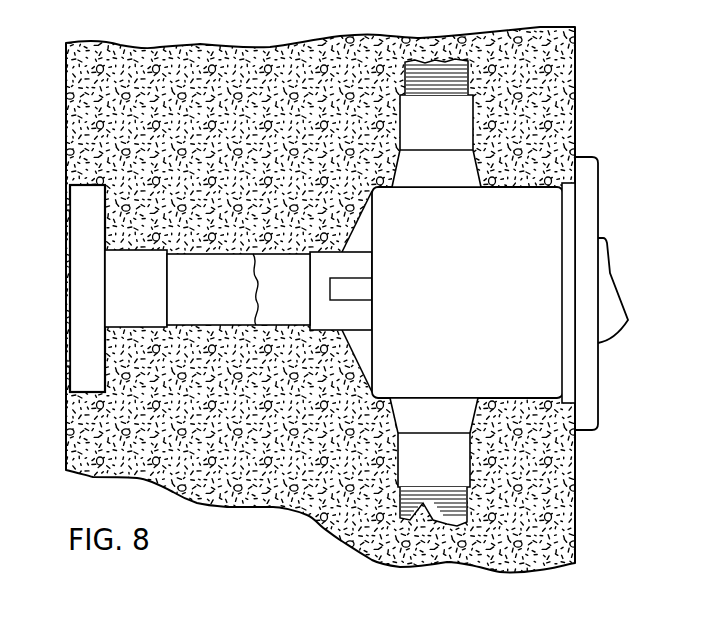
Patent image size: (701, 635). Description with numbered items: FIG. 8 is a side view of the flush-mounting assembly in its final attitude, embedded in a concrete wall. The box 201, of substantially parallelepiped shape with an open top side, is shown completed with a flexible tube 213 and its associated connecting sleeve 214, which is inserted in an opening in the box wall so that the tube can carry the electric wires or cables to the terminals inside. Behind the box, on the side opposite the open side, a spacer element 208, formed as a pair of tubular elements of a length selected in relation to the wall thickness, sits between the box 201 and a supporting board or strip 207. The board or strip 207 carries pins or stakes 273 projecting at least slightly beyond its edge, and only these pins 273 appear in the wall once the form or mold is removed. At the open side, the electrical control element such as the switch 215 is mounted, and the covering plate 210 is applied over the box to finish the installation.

The box 201 is at (430, 298).
The supporting board or strip 207 is at (100, 286).
The spacer element 208 is at (220, 296).
The covering plate 210 is at (585, 404).
The flexible tube 213 is at (430, 502).
The connecting sleeve 214 is at (447, 137).
The switch 215 is at (608, 310).
The pins or stakes 273 is at (68, 363).